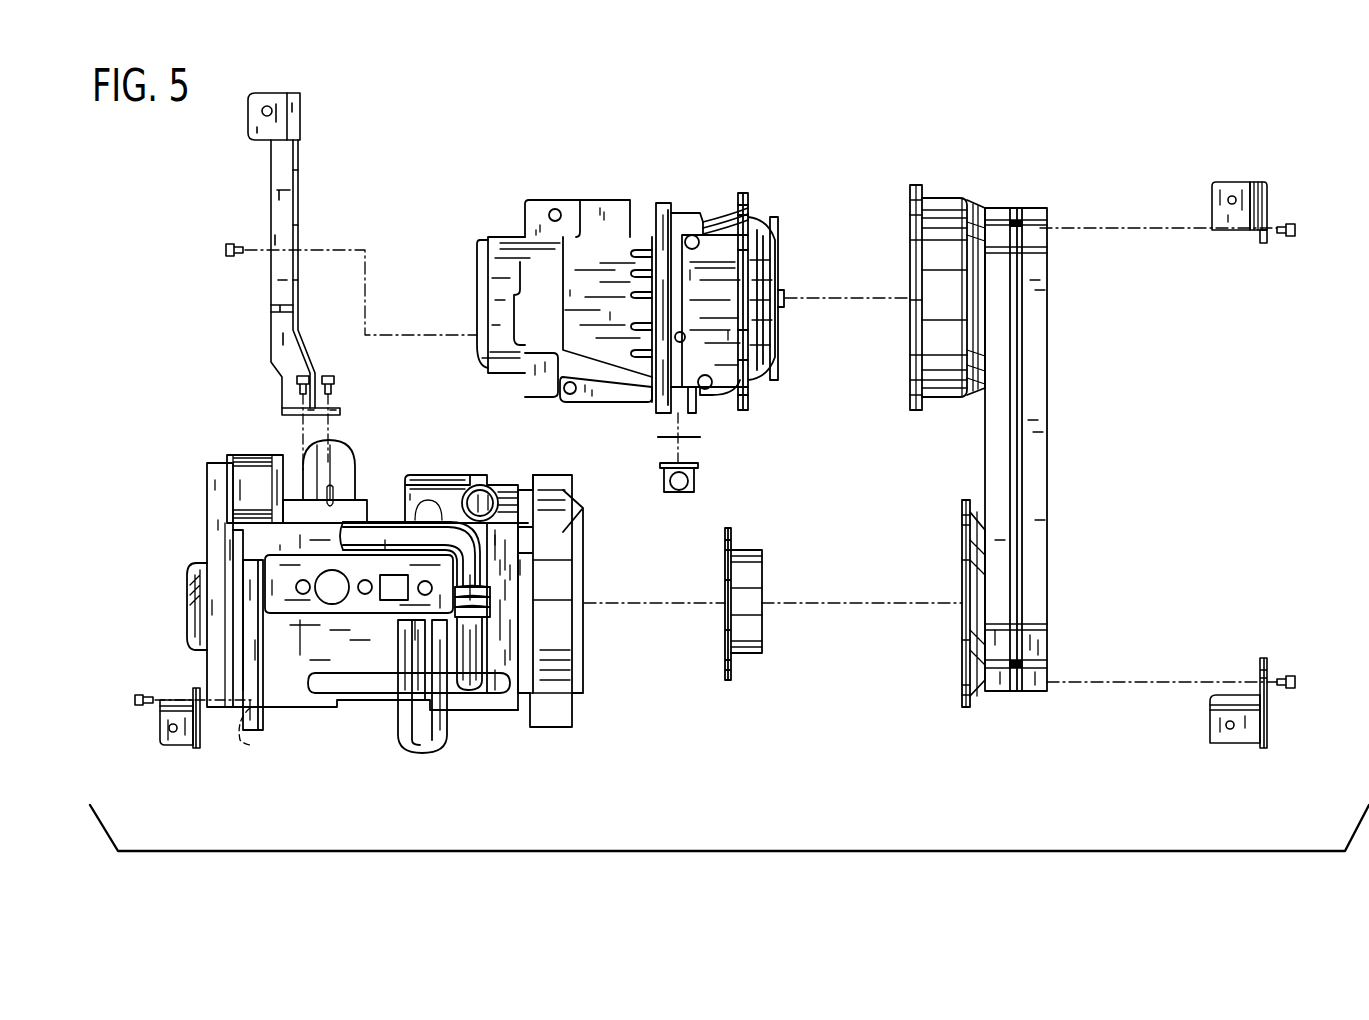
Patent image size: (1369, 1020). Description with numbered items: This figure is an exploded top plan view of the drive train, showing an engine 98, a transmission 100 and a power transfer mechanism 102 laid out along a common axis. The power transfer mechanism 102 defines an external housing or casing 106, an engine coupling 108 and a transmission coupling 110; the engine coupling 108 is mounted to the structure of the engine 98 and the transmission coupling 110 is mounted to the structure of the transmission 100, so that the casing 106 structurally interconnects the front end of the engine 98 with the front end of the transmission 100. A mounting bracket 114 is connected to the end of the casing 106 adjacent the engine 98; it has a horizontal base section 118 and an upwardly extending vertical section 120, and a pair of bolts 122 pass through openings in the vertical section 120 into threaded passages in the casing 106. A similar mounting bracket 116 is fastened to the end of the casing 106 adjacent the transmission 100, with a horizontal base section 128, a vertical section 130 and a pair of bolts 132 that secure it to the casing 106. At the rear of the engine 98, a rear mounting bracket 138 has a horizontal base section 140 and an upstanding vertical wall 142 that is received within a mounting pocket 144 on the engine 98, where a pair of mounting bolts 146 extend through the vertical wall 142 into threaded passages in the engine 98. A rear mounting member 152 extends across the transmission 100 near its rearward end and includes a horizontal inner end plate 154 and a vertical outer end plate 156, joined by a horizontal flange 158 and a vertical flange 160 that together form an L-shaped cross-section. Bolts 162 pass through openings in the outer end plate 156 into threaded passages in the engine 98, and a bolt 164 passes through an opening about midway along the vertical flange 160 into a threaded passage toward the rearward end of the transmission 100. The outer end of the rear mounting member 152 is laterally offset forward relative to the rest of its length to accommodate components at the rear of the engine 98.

The engine 98 is at (483, 752).
The transmission 100 is at (645, 168).
The power transfer mechanism 102 is at (1064, 449).
The casing 106 is at (1052, 485).
The engine coupling 108 is at (966, 712).
The transmission coupling 110 is at (940, 198).
The mounting bracket 114 is at (1250, 725).
The mounting bracket 116 is at (1192, 194).
The horizontal base section 118 is at (1210, 728).
The vertical section 120 is at (1268, 703).
The bolts 122 is at (1298, 681).
The horizontal base section 128 is at (1235, 182).
The vertical section 130 is at (1268, 216).
The bolts 132 is at (1297, 232).
The rear mounting bracket 138 is at (205, 730).
The horizontal base section 140 is at (168, 746).
The vertical wall 142 is at (205, 743).
The mounting pocket 144 is at (254, 748).
The mounting bolts 146 is at (150, 695).
The rear mounting member 152 is at (322, 261).
The horizontal inner end plate 154 is at (283, 93).
The vertical outer end plate 156 is at (292, 413).
The horizontal flange 158 is at (280, 204).
The vertical flange 160 is at (300, 205).
The bolts 162 is at (328, 376).
The bolt 164 is at (227, 251).